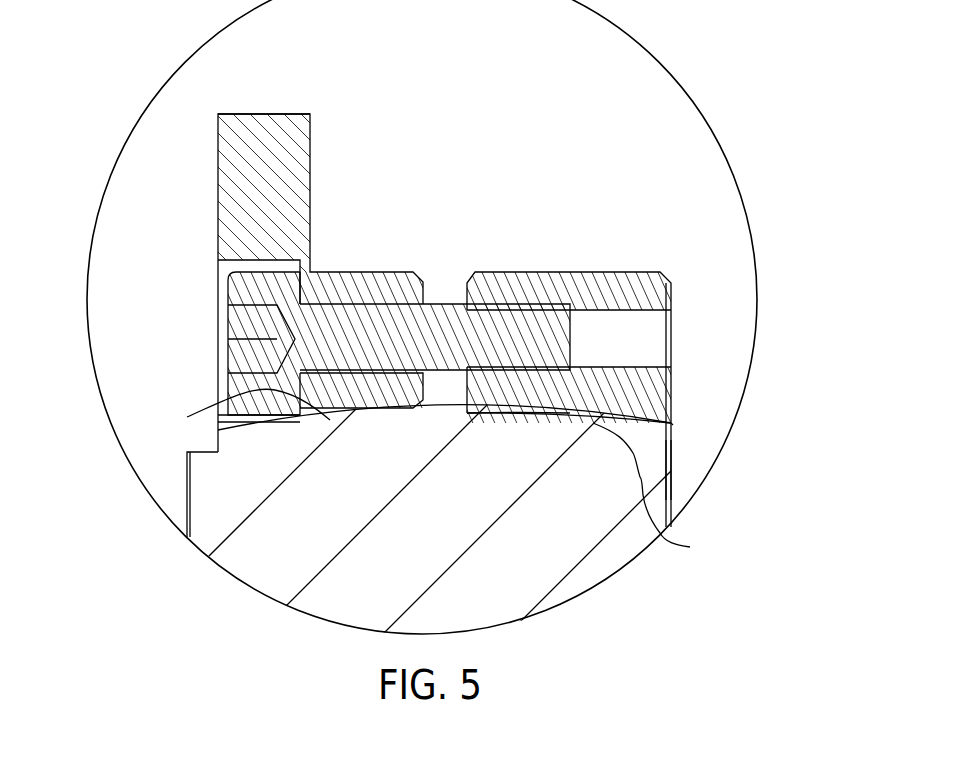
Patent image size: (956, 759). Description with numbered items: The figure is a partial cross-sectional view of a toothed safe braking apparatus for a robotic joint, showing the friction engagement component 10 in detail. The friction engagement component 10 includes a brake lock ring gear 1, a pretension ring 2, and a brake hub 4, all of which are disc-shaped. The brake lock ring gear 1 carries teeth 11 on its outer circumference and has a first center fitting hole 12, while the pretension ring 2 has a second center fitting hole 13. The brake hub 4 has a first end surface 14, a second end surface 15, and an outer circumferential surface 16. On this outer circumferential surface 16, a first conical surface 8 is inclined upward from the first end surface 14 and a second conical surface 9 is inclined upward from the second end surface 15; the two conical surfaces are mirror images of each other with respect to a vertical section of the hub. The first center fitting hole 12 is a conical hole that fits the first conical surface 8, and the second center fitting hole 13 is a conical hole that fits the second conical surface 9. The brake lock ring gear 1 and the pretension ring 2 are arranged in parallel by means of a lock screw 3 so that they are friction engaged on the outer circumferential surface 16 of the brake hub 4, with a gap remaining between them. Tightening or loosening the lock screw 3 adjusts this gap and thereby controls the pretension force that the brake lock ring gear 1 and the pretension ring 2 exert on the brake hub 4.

The brake lock ring gear 1 is at (228, 233).
The pretension ring 2 is at (655, 292).
The lock screw 3 is at (453, 313).
The brake hub 4 is at (595, 558).
The first conical surface 8 is at (266, 428).
The second conical surface 9 is at (652, 494).
The friction engagement component 10 is at (533, 95).
The teeth 11 is at (280, 123).
The first center fitting hole 12 is at (187, 417).
The second center fitting hole 13 is at (673, 425).
The first end surface 14 is at (185, 455).
The second end surface 15 is at (673, 468).
The outer circumferential surface 16 is at (477, 413).